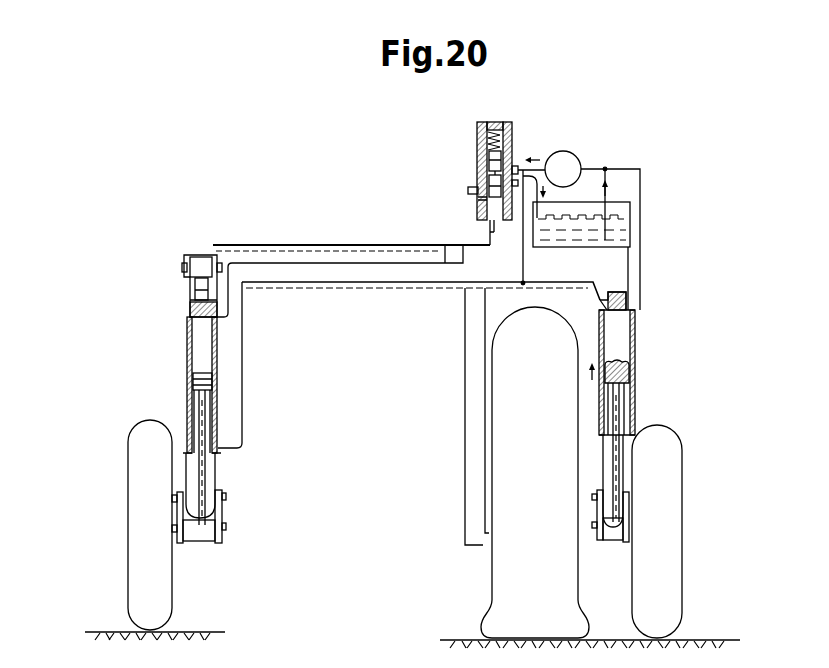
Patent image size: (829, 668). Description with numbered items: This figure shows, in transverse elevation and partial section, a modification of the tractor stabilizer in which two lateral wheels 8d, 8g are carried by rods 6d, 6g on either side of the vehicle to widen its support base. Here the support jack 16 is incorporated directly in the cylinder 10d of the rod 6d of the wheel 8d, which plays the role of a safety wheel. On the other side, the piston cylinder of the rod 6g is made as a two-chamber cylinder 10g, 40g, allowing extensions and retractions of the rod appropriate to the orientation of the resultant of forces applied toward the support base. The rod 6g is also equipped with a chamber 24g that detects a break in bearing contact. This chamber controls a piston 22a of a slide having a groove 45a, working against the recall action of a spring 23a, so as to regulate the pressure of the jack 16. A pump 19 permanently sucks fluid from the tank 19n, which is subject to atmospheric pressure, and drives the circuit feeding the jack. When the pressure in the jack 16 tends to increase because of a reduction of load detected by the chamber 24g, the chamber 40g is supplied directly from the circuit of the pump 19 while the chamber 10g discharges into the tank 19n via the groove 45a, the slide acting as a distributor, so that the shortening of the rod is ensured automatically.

The spring 23a is at (495, 131).
The groove of the slide 45a is at (484, 172).
The piston of the slide 22a is at (487, 190).
The pump 19 is at (572, 160).
The tank 19n is at (626, 229).
The chamber 24g is at (198, 253).
The cylinder 10g is at (188, 338).
The chamber 40g is at (190, 402).
The wheel 8g is at (142, 432).
The rod 6g is at (222, 462).
The support jack 16 is at (624, 331).
The cylinder 10d is at (628, 357).
The rod 6d is at (594, 424).
The wheel 8d is at (672, 487).